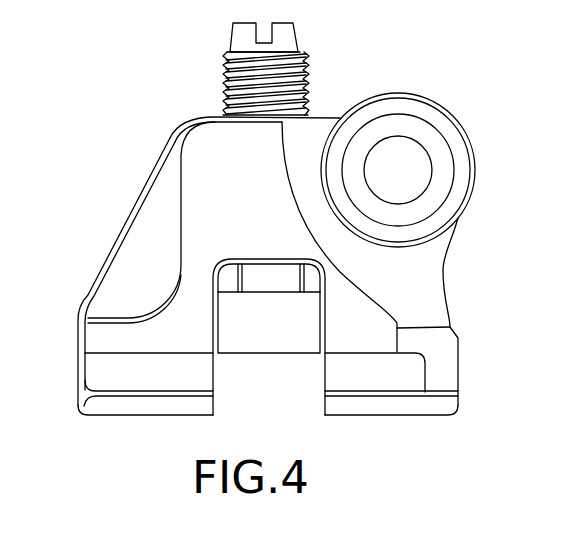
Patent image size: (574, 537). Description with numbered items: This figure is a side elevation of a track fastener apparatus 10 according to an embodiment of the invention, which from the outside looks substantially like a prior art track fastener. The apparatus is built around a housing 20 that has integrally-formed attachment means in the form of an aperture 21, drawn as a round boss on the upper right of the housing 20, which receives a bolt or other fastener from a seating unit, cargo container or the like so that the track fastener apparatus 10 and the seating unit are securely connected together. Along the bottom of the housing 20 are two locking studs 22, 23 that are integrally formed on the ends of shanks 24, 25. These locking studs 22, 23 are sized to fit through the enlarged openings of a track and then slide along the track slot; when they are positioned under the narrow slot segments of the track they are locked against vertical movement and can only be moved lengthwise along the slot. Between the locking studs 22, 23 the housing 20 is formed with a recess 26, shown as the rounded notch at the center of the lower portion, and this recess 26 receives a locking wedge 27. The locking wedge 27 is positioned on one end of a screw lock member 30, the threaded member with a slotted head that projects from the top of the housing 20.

The track fastener apparatus 10 is at (140, 110).
The housing 20 is at (206, 190).
The aperture 21 is at (434, 158).
The locking stud 22 is at (98, 407).
The locking stud 23 is at (440, 407).
The shank 24 is at (105, 375).
The shank 25 is at (418, 371).
The recess 26 is at (270, 260).
The locking wedge 27 is at (248, 322).
The screw lock member 30 is at (253, 278).